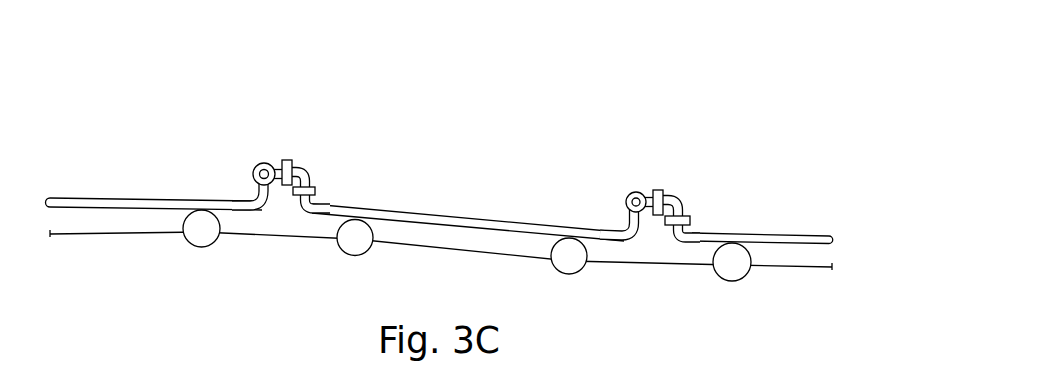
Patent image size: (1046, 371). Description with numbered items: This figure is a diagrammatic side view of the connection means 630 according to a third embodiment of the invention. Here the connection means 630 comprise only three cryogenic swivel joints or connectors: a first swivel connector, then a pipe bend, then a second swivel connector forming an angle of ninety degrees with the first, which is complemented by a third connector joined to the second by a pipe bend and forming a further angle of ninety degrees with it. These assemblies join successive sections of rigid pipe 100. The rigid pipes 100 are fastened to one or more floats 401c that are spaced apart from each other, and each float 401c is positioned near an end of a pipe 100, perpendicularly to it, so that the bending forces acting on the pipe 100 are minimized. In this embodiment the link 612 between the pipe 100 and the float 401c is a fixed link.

The rigid pipe 100 is at (512, 220).
The float 401c is at (337, 254).
The fixed link 612 is at (572, 235).
The connection means 630 is at (673, 136).